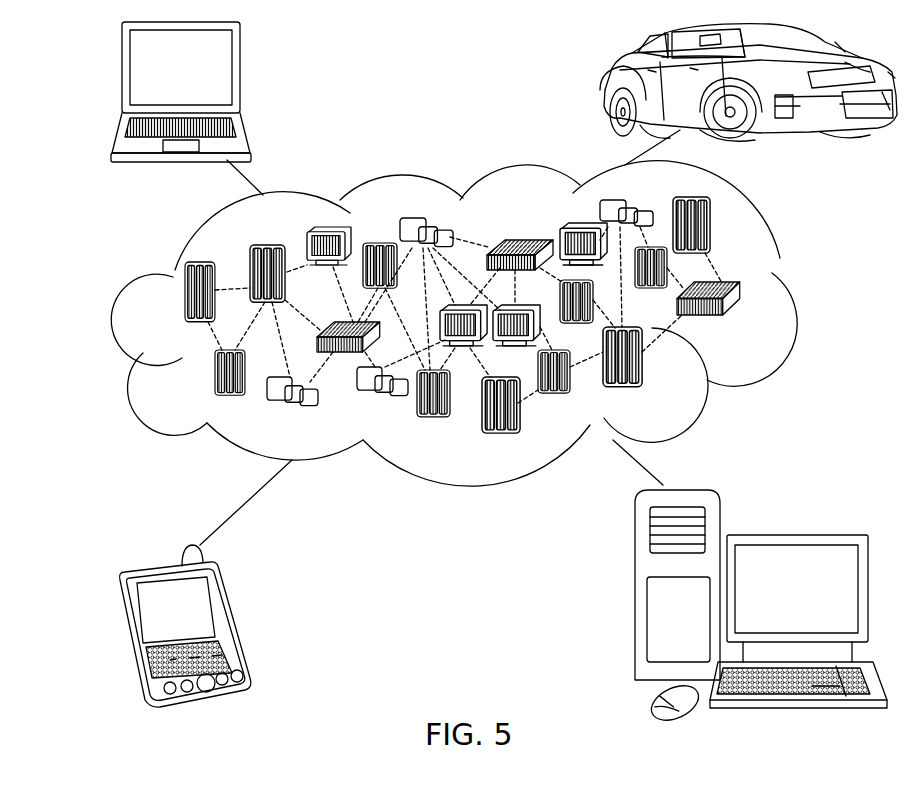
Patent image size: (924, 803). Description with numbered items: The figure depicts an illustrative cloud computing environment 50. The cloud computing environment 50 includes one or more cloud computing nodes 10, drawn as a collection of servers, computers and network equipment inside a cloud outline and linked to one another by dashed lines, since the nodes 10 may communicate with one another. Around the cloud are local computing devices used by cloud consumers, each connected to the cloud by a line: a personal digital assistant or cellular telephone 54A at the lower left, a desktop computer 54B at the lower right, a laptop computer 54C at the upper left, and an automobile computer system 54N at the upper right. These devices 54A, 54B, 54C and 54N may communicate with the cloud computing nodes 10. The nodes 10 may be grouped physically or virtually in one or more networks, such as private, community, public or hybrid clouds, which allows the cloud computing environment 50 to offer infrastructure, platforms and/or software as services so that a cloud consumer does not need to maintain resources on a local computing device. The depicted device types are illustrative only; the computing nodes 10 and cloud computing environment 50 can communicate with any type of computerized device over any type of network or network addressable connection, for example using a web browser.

The cloud computing node 10 is at (747, 323).
The cloud computing environment 50 is at (476, 324).
The personal digital assistant or cellular telephone 54A is at (237, 620).
The desktop computer 54B is at (793, 535).
The laptop computer 54C is at (245, 77).
The automobile computer system 54N is at (604, 86).